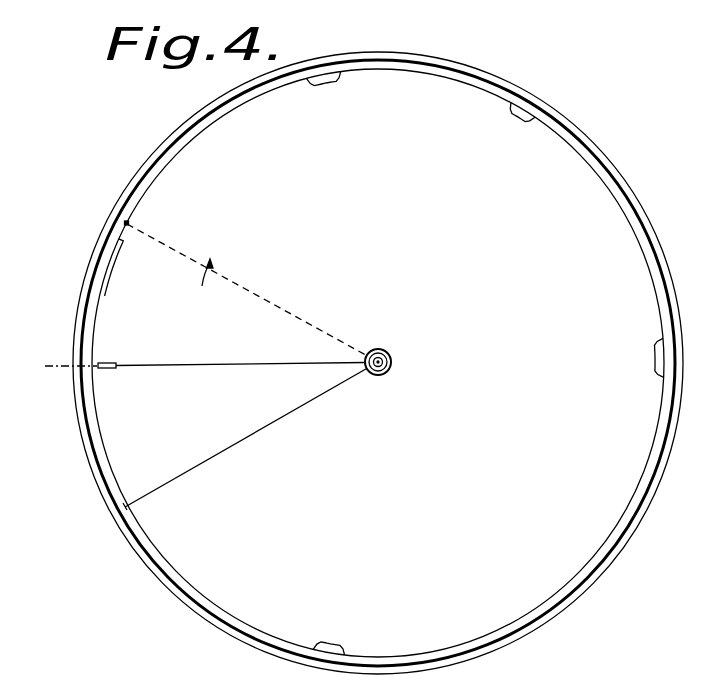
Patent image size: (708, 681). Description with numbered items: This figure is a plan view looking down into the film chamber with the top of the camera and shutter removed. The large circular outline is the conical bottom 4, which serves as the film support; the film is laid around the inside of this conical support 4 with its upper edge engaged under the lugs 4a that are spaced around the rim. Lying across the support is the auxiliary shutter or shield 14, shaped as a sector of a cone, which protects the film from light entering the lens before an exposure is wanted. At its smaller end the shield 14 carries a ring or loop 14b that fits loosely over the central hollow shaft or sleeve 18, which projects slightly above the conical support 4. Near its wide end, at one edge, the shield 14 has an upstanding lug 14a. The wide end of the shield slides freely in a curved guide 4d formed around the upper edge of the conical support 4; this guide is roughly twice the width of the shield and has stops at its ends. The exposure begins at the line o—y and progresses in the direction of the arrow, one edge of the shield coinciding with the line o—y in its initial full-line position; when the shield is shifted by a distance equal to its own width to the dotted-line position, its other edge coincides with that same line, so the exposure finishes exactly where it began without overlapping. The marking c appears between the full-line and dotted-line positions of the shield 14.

The conical bottom 4 is at (338, 566).
The lugs 4a is at (648, 393).
The curved guide 4d is at (134, 313).
The auxiliary shutter or shield 14 is at (218, 427).
The upstanding lug 14a is at (146, 354).
The ring or loop 14b is at (432, 346).
The hollow shaft or sleeve 18 is at (385, 371).
The line o—y endpoint o is at (392, 362).
The line o—y endpoint y is at (28, 368).
The angle c is at (131, 446).